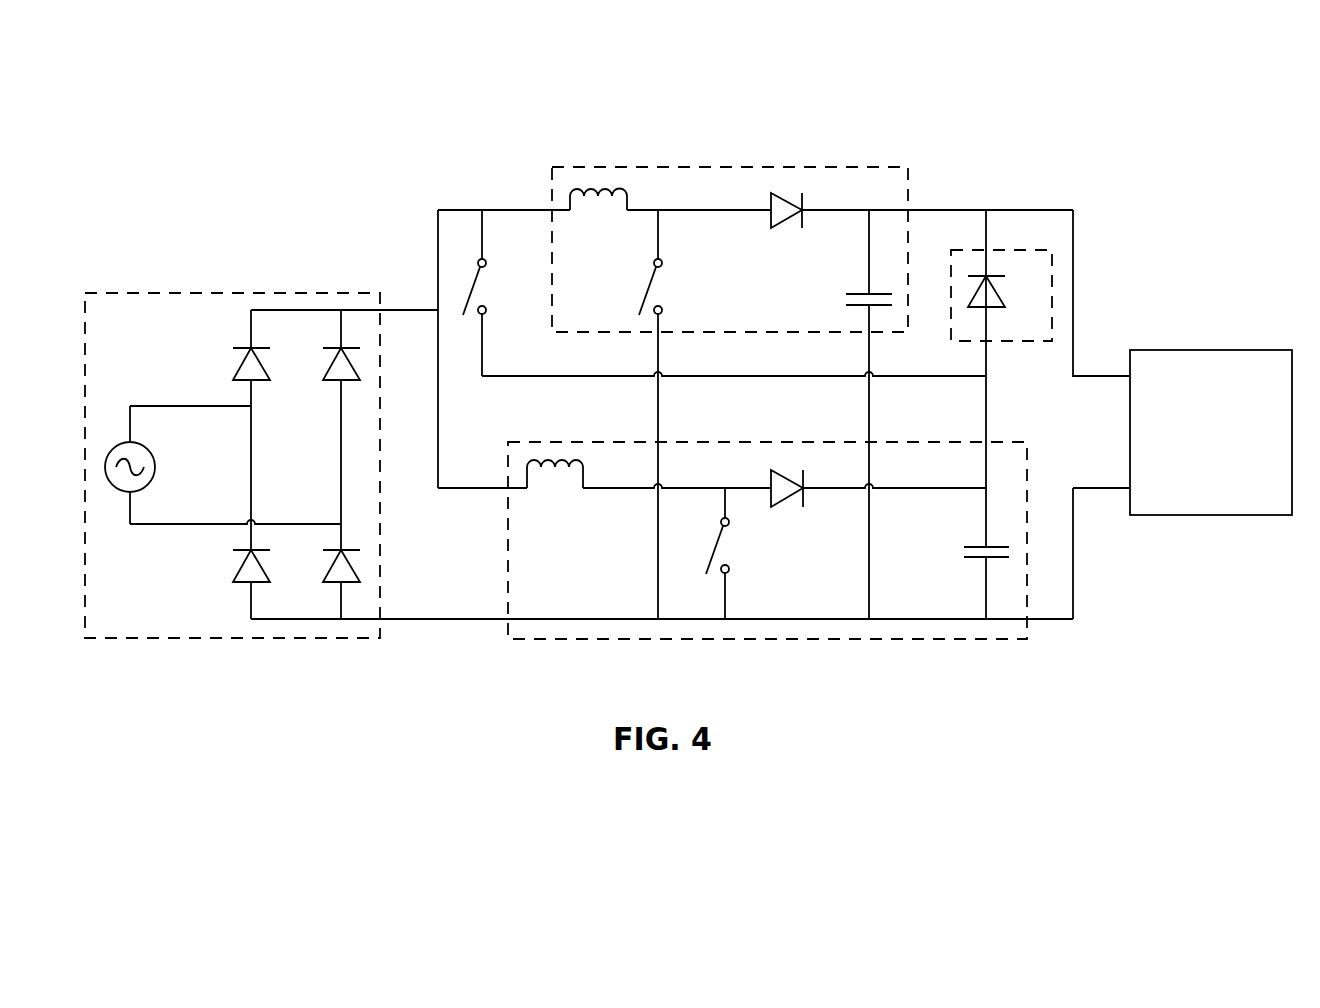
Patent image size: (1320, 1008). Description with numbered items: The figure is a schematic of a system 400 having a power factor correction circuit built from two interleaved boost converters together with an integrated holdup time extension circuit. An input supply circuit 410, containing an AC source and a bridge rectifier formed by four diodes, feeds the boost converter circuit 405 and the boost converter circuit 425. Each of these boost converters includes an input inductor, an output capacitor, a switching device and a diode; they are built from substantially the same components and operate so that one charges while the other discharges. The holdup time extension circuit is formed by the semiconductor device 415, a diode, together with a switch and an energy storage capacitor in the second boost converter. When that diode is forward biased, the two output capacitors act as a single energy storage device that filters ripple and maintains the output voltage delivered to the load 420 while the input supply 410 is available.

The system 400 is at (1201, 104).
The boost converter circuit 405 is at (658, 167).
The input supply circuit 410 is at (252, 268).
The semiconductor device 415 is at (1000, 341).
The load 420 is at (1211, 432).
The boost converter circuit 425 is at (993, 640).